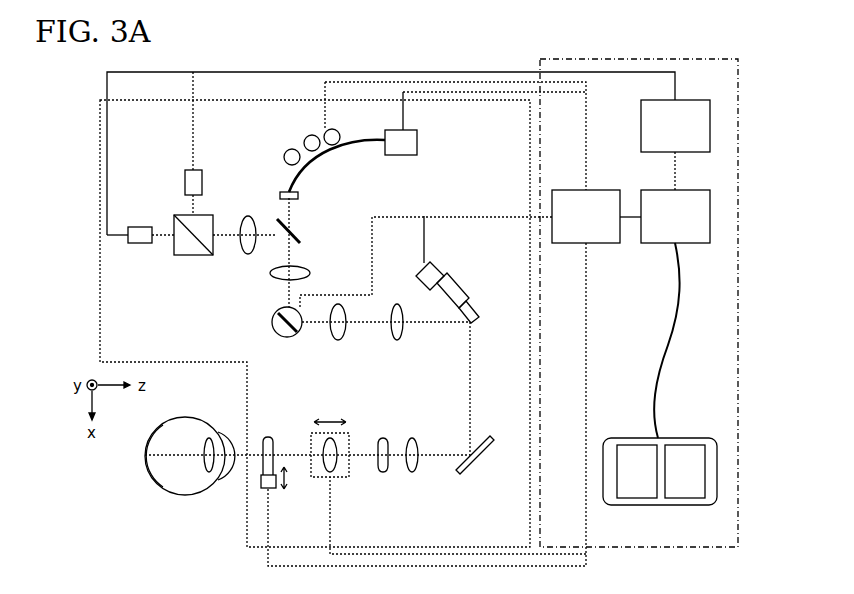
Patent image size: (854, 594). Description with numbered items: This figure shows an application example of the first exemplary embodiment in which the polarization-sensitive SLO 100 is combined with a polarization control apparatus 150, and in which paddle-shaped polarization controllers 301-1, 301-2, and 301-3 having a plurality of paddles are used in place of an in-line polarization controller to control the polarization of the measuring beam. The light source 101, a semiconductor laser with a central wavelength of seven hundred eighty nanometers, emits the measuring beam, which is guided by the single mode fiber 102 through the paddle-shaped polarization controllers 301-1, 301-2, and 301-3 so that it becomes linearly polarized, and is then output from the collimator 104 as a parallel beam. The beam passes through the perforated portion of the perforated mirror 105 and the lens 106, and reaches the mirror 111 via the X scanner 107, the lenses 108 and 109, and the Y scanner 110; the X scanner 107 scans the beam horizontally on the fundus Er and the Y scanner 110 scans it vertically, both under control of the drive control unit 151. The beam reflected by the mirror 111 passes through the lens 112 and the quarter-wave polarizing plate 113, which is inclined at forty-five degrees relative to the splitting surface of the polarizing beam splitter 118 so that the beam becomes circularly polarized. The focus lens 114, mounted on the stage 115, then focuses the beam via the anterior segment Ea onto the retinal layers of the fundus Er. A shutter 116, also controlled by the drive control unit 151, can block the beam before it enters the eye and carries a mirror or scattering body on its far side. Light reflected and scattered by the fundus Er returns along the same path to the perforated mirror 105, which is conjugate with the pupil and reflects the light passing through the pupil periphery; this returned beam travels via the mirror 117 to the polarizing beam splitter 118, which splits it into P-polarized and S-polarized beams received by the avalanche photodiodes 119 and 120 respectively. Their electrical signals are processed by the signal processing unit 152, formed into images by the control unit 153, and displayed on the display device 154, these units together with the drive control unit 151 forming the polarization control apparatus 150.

The polarization-sensitive SLO 100 is at (197, 362).
The light source 101 is at (418, 140).
The single mode fiber 102 is at (366, 148).
The collimator 104 is at (280, 195).
The perforated mirror 105 is at (299, 235).
The lens 106 is at (310, 272).
The X scanner 107 is at (270, 329).
The lens 108 is at (338, 341).
The lens 109 is at (397, 341).
The Y scanner 110 is at (461, 276).
The mirror 111 is at (489, 436).
The lens 112 is at (412, 473).
The λ/4 polarizing plate 113 is at (383, 473).
The focus lens 114 is at (342, 445).
The stage 115 is at (314, 480).
The shutter 116 is at (268, 437).
The mirror 117 is at (248, 254).
The polarizing beam splitter 118 is at (196, 256).
The avalanche photodiode 119 is at (140, 244).
The avalanche photodiode 120 is at (185, 183).
The polarization control apparatus 150 is at (665, 548).
The drive control unit 151 is at (597, 190).
The signal processing unit 152 is at (690, 100).
The control unit 153 is at (692, 190).
The display device 154 is at (696, 426).
The paddle-shaped polarization controller 301-1 is at (350, 128).
The paddle-shaped polarization controller 301-2 is at (305, 138).
The paddle-shaped polarization controller 301-3 is at (284, 155).
The fundus Er is at (145, 456).
The anterior segment Ea is at (228, 478).